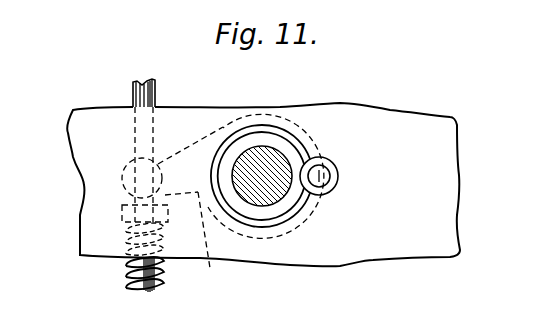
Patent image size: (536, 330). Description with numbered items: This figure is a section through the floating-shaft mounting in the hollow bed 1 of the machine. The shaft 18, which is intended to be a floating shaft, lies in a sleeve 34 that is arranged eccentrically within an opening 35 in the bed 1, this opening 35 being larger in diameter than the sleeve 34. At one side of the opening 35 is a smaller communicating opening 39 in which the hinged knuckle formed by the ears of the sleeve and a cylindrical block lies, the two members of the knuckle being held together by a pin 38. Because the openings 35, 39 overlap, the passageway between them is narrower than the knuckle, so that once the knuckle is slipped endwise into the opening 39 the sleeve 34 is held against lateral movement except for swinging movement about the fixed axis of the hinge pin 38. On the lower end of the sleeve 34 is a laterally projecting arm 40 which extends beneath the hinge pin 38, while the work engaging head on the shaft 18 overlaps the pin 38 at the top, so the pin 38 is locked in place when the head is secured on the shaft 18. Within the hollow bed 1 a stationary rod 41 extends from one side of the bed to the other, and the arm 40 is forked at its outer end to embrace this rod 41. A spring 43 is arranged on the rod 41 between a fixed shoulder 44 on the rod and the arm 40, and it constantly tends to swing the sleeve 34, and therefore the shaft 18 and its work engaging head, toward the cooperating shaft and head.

The bed 1 is at (400, 118).
The shaft 18 is at (274, 146).
The sleeve 34 is at (266, 168).
The opening 35 is at (242, 138).
The pin 38 is at (319, 176).
The smaller communicating opening 39 is at (331, 158).
The arm 40 is at (261, 208).
The stationary rod 41 is at (153, 93).
The spring 43 is at (127, 267).
The fixed shoulder 44 is at (122, 212).